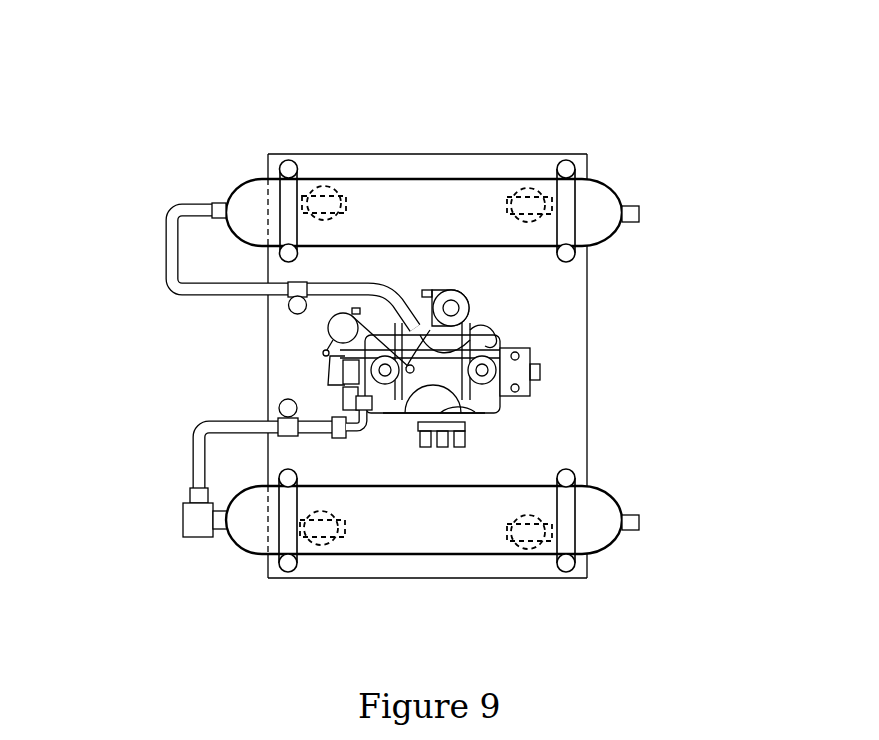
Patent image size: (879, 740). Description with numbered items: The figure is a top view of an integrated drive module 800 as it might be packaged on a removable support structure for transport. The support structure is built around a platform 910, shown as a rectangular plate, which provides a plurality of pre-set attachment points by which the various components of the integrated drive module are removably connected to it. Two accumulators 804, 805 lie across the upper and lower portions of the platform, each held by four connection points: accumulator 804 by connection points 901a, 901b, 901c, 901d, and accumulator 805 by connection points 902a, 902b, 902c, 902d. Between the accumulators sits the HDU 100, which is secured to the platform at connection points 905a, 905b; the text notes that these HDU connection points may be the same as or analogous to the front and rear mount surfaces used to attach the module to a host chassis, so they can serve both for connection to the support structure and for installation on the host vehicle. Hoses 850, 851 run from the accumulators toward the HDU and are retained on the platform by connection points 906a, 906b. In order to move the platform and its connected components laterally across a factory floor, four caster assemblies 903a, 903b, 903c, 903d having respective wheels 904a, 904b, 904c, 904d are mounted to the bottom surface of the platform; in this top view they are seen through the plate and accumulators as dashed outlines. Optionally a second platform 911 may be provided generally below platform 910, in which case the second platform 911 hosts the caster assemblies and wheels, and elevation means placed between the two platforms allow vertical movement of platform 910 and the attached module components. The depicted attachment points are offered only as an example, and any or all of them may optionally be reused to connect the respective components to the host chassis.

The integrated drive module 800 is at (423, 58).
The HDU 100 is at (478, 305).
The accumulator 804 is at (618, 191).
The accumulator 805 is at (620, 543).
The hose 850 is at (172, 243).
The hose 851 is at (192, 439).
The connection point 901a is at (278, 170).
The connection point 901b is at (278, 253).
The connection point 901c is at (582, 170).
The connection point 901d is at (588, 253).
The connection point 902a is at (278, 478).
The connection point 902b is at (278, 563).
The connection point 902c is at (605, 488).
The connection point 902d is at (586, 566).
The caster assembly 903a is at (327, 186).
The caster assembly 903b is at (527, 188).
The caster assembly 903c is at (327, 546).
The caster assembly 903d is at (527, 550).
The wheel 904a is at (346, 197).
The wheel 904b is at (508, 197).
The wheel 904c is at (345, 548).
The wheel 904d is at (507, 541).
The connection point 905a is at (485, 338).
The connection point 905b is at (462, 418).
The connection point 906a is at (296, 313).
The connection point 906b is at (287, 400).
The platform 910 is at (541, 366).
The second platform 911 is at (587, 355).